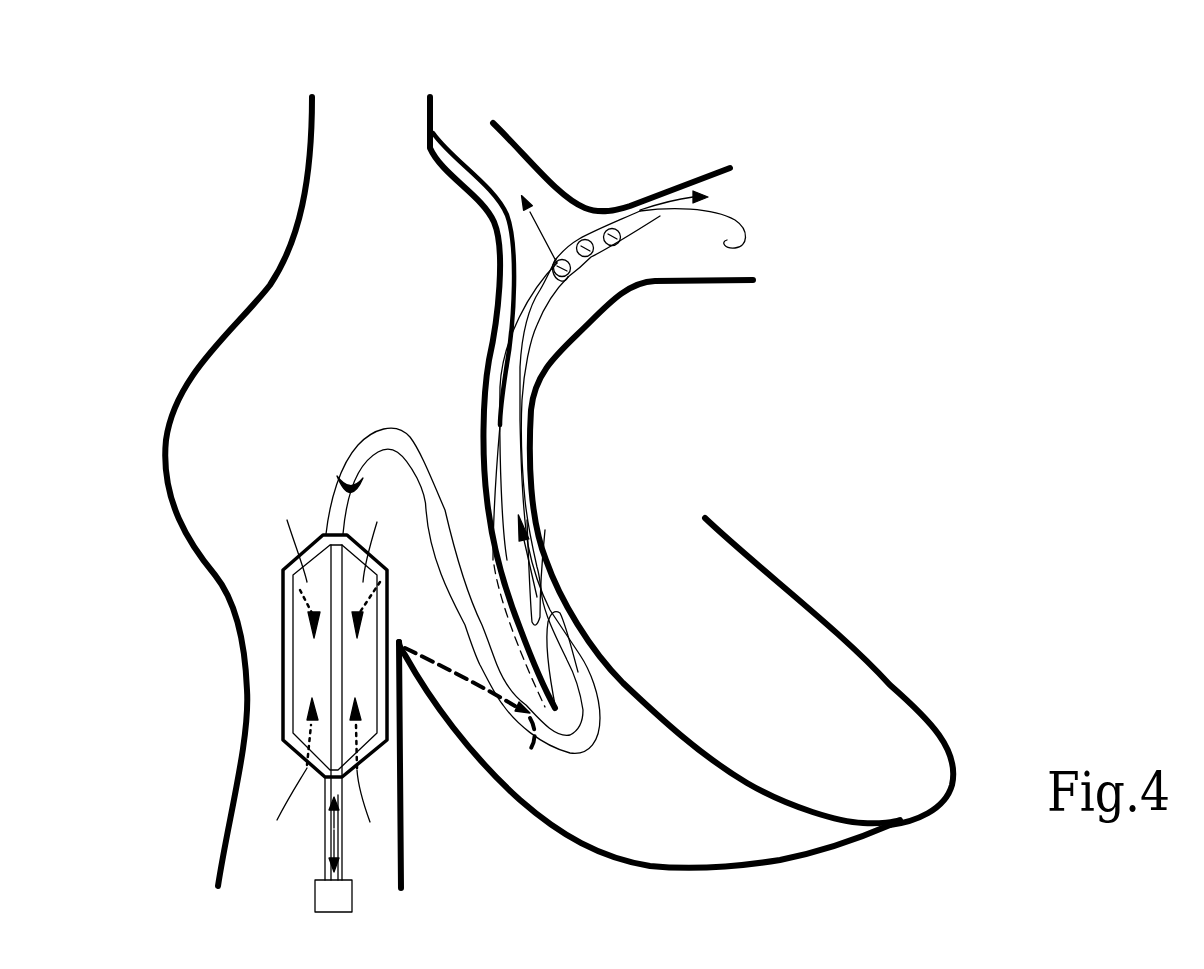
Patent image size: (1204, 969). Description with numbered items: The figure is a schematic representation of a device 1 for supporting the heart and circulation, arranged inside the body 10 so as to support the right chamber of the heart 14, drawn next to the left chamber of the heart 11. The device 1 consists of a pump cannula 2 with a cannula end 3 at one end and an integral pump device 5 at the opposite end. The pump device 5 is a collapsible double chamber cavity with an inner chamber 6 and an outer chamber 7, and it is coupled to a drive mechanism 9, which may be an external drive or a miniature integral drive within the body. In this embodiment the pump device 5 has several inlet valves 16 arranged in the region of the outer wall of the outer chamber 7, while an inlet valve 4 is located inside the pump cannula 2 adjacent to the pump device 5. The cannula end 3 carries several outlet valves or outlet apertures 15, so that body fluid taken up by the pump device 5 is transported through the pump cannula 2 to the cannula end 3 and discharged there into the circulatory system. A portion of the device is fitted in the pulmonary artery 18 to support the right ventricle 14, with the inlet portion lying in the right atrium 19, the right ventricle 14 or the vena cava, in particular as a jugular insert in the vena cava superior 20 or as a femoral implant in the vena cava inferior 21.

The device 1 is at (422, 506).
The pump cannula 2 is at (427, 463).
The cannula end 3 is at (623, 227).
The inlet valve 4 is at (353, 470).
The pump device 5 is at (268, 660).
The inner chamber 6 is at (333, 672).
The outer chamber 7 is at (283, 620).
The drive mechanism 9 is at (348, 897).
The body 10 is at (758, 453).
The left chamber of the heart 11 is at (833, 718).
The right chamber of the heart 14 is at (580, 805).
The outlet apertures 15 is at (610, 226).
The inlet valves 16 is at (293, 567).
The pulmonary artery 18 is at (570, 230).
The right atrium 19 is at (278, 373).
The vena cava superior 20 is at (358, 143).
The vena cava inferior 21 is at (256, 875).